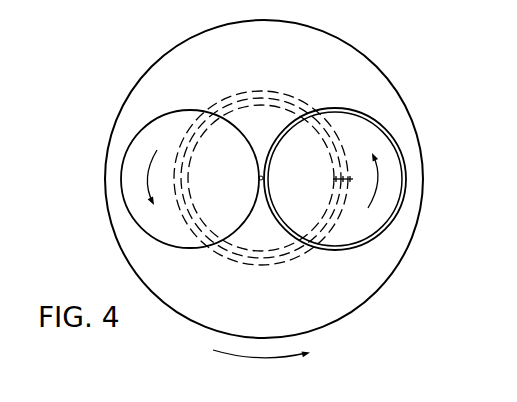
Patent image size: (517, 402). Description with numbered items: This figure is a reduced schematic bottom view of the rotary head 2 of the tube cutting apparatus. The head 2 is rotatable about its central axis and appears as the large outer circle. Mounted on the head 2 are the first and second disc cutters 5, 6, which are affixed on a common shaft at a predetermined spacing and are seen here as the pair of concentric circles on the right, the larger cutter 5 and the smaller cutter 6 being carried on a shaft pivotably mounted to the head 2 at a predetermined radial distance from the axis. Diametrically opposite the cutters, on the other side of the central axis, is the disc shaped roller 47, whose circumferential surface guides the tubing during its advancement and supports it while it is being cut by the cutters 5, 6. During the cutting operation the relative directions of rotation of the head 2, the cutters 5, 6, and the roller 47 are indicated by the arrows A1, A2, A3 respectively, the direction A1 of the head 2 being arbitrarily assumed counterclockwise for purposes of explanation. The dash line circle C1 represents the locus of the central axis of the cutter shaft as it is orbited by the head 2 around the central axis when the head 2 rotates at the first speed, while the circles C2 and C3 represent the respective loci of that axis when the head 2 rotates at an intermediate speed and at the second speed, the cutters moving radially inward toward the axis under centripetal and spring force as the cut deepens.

The head 2 is at (373, 66).
The roller 47 is at (163, 118).
The first disc cutter 5 is at (404, 151).
The second disc cutter 6 is at (399, 215).
The dash line circle C1 is at (250, 251).
The circle C2 is at (278, 259).
The circle C3 is at (306, 261).
The arrow A1 is at (267, 356).
The arrow A2 is at (377, 178).
The arrow A3 is at (150, 173).